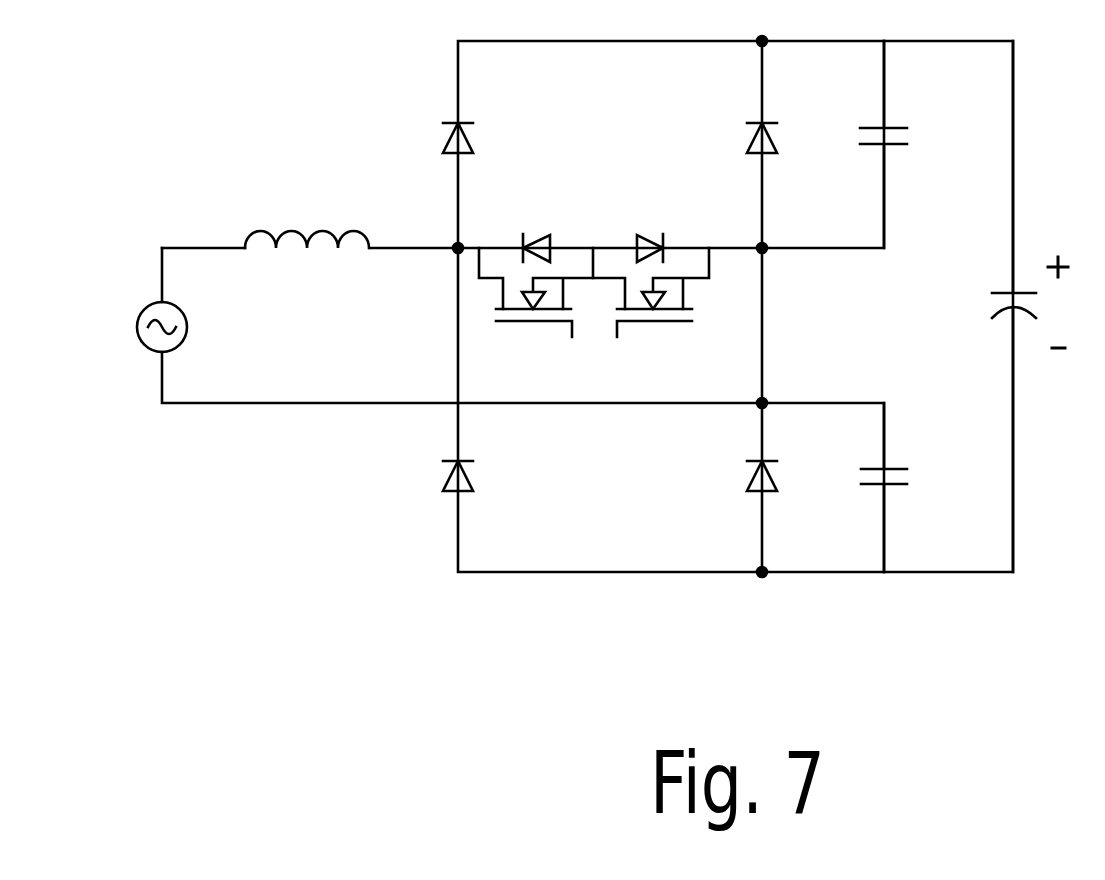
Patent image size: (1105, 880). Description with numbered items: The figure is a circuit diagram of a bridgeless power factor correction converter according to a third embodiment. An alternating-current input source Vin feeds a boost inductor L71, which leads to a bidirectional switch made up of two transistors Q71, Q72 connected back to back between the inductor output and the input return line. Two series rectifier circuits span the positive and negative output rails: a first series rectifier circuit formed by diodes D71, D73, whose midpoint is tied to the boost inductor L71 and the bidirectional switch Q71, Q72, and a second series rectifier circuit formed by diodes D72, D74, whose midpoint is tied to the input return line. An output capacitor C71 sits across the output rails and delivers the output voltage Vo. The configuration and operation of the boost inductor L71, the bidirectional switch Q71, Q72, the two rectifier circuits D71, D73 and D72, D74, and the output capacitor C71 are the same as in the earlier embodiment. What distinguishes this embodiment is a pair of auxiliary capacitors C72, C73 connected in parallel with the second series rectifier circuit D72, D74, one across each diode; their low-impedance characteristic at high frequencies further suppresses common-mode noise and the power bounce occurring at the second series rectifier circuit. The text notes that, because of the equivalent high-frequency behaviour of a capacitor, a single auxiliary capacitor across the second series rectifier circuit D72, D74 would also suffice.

The AC input voltage source Vin is at (128, 328).
The boost inductor L71 is at (307, 211).
The first series rectifier circuit diode D71 is at (500, 141).
The second series rectifier circuit diode D72 is at (720, 141).
The first series rectifier circuit diode D73 is at (502, 481).
The second series rectifier circuit diode D74 is at (721, 481).
The bidirectional switch transistor Q71 is at (536, 310).
The bidirectional switch transistor Q72 is at (651, 310).
The output capacitor C71 is at (978, 306).
The auxiliary capacitor C72 is at (924, 144).
The auxiliary capacitor C73 is at (926, 487).
The output voltage Vo is at (1066, 302).